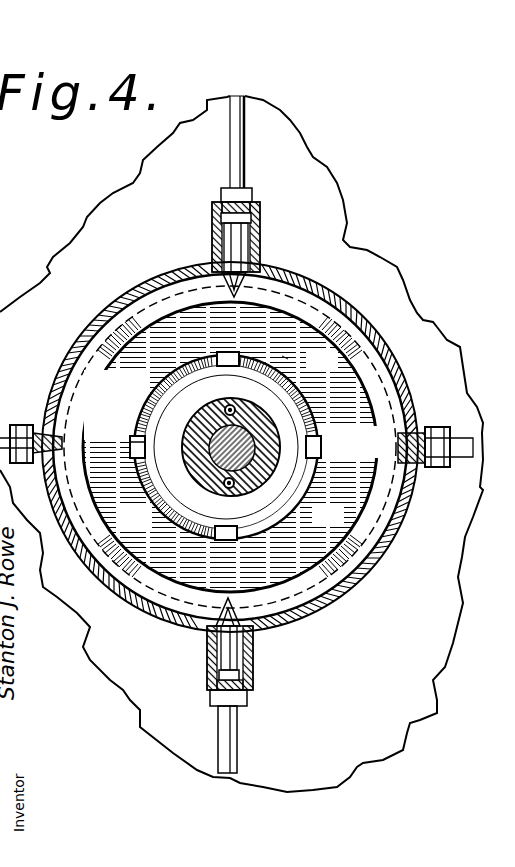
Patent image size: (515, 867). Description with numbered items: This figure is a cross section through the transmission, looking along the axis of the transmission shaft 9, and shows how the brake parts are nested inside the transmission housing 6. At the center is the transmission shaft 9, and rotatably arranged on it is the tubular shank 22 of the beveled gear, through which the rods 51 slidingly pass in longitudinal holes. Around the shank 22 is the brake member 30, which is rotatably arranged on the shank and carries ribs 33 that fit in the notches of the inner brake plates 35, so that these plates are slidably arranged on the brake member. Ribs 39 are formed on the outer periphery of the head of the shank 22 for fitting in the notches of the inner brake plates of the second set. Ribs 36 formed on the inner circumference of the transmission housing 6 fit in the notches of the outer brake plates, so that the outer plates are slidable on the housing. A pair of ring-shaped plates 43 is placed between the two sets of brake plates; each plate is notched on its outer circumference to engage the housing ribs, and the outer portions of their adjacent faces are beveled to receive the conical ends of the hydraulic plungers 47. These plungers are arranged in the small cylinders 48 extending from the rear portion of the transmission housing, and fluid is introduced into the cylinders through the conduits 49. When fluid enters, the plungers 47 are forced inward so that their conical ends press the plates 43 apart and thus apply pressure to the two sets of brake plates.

The transmission housing 6 is at (330, 153).
The transmission shaft 9 is at (256, 453).
The tubular shank 22 is at (258, 450).
The brake member 30 is at (170, 404).
The ribs 33 is at (136, 439).
The inner brake plates 35 is at (182, 519).
The ribs 36 is at (47, 427).
The ribs 39 is at (282, 356).
The ring-shaped plates 43 is at (317, 340).
The hydraulic plungers 47 is at (232, 242).
The small cylinders 48 is at (262, 230).
The conduits 49 is at (230, 725).
The rods 51 is at (240, 405).